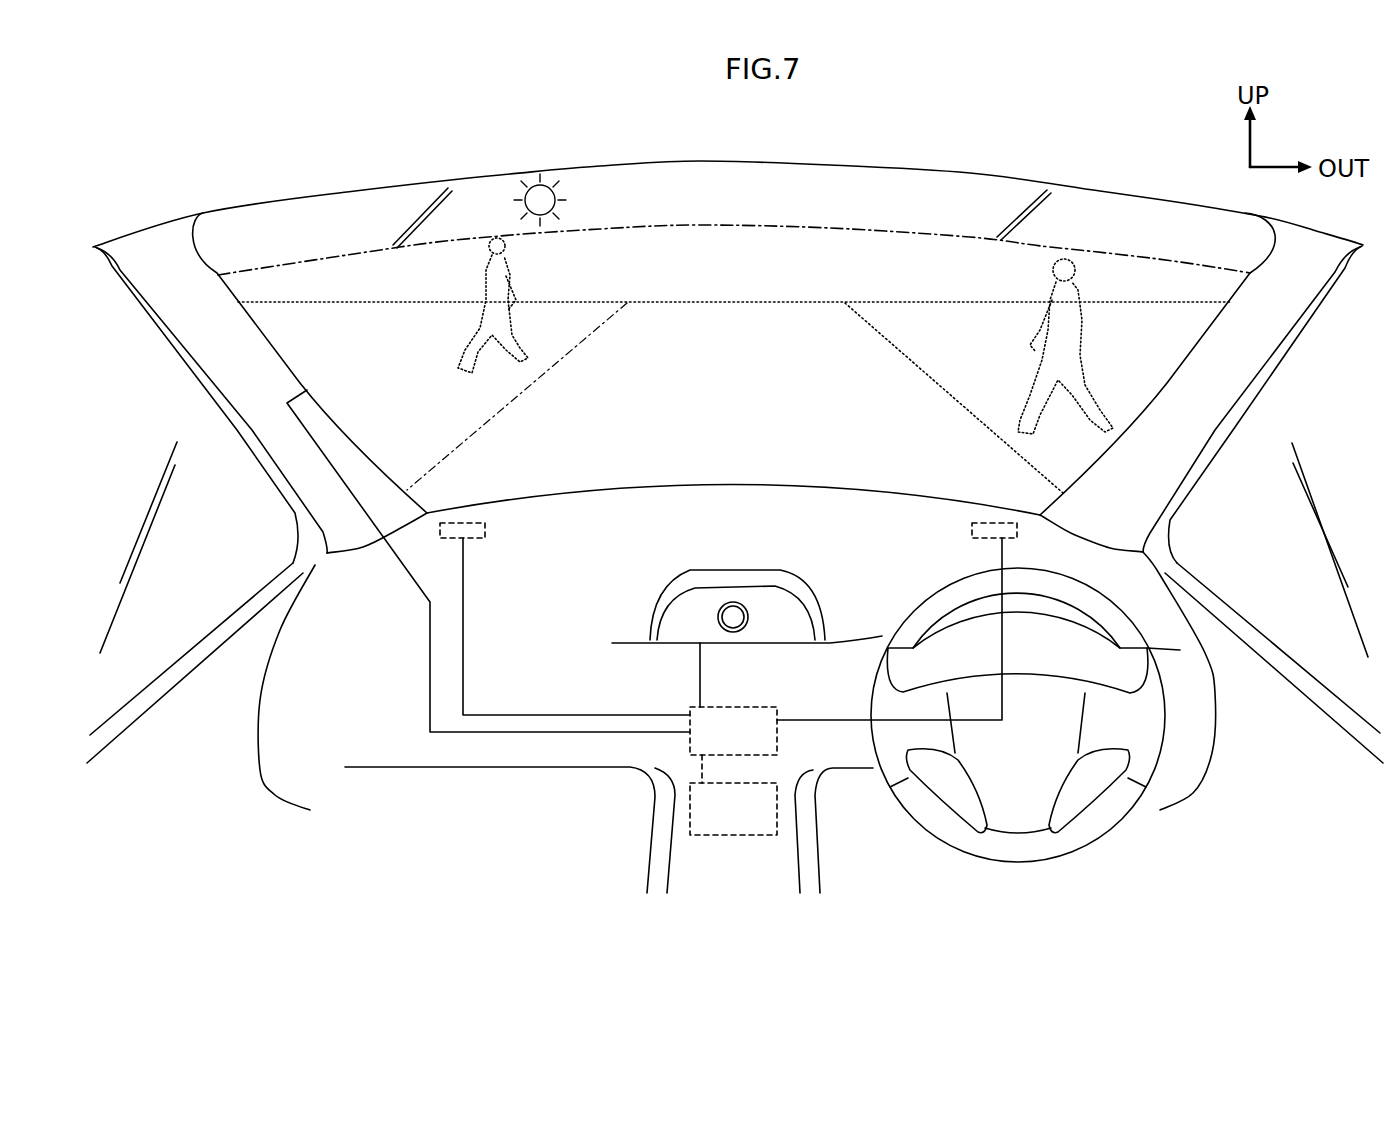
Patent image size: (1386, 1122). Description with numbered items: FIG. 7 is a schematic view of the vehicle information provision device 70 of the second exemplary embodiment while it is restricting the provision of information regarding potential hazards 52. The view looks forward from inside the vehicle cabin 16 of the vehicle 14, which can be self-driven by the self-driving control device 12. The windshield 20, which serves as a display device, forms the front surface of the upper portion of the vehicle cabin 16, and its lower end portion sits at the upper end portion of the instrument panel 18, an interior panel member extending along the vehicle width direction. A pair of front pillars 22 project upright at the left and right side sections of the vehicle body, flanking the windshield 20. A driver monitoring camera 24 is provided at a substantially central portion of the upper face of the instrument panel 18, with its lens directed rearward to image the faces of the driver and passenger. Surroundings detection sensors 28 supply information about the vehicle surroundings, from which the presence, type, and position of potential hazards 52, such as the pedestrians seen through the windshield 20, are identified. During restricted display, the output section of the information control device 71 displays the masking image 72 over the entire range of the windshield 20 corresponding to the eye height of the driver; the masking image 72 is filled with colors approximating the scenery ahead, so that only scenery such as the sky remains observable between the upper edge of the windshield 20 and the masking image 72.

The self-driving control device 12 is at (720, 836).
The vehicle 14 is at (1149, 136).
The vehicle cabin 16 is at (901, 891).
The instrument panel 18 is at (836, 556).
The windshield 20 is at (305, 374).
The front pillars 22 is at (257, 470).
The driver monitoring camera 24 is at (740, 612).
The surroundings detection sensors 28 is at (486, 530).
The potential hazards 52 is at (515, 280).
The vehicle information provision device 70 is at (1019, 163).
The information control device 71 is at (762, 706).
The masking image 72 is at (732, 225).